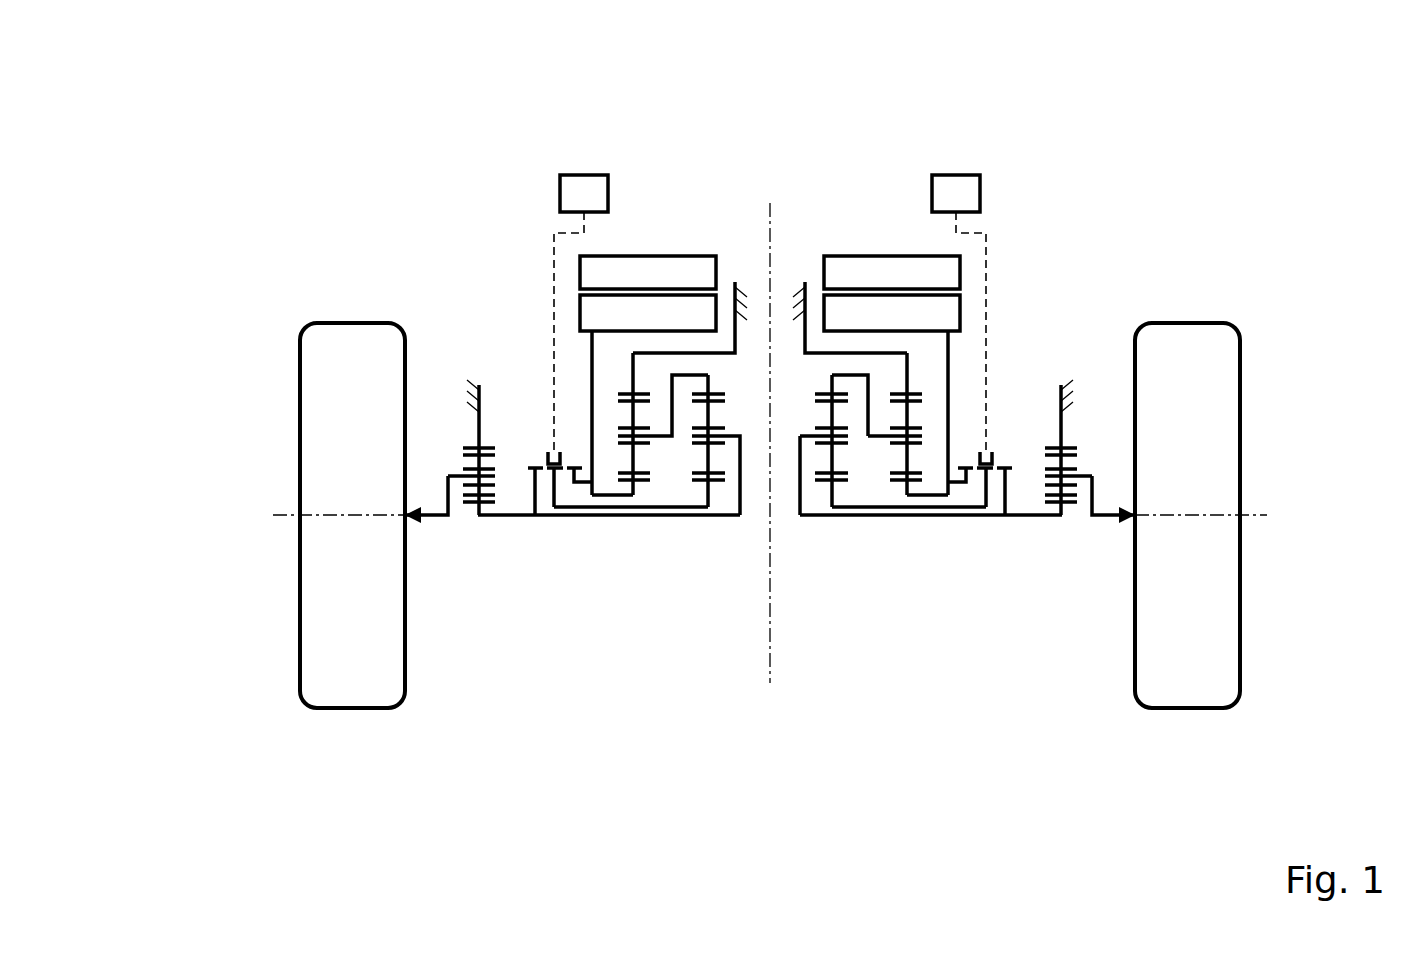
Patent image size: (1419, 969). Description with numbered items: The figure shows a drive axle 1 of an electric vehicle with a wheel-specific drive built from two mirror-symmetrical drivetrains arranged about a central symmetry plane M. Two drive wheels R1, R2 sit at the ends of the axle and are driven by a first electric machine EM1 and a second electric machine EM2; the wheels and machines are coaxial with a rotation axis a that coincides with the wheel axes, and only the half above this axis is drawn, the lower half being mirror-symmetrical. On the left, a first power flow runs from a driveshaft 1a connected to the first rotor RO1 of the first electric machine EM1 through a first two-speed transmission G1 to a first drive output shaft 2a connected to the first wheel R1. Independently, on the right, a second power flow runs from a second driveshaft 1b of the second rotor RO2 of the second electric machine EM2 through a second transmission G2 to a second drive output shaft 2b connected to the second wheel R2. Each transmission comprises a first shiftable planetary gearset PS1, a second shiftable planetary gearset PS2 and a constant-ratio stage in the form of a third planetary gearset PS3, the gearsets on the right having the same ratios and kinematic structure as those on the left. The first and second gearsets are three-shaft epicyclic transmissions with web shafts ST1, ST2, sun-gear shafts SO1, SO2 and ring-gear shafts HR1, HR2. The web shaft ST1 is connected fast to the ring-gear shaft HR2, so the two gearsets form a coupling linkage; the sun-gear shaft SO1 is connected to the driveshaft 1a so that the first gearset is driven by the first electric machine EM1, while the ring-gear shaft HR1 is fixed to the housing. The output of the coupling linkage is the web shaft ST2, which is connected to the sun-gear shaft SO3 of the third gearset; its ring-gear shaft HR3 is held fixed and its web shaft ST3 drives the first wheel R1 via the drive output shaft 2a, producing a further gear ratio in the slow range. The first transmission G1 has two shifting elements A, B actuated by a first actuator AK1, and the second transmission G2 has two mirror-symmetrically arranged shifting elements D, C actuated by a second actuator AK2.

The drive axle 1 is at (1130, 208).
The driveshaft 1a is at (592, 357).
The second driveshaft 1b is at (950, 365).
The first drive output shaft 2a is at (448, 513).
The second drive output shaft 2b is at (1092, 513).
The rotation axis a is at (293, 517).
The central symmetry plane M is at (770, 653).
The first drive wheel R1 is at (345, 577).
The second drive wheel R2 is at (1195, 577).
The first two-speed transmission G1 is at (582, 555).
The second transmission G2 is at (928, 557).
The first electric machine EM1 is at (631, 250).
The second electric machine EM2 is at (902, 250).
The first rotor RO1 is at (692, 312).
The second rotor RO2 is at (943, 317).
The first actuator AK1 is at (583, 192).
The second actuator AK2 is at (958, 193).
The first shiftable planetary gearset PS1 is at (634, 532).
The second shiftable planetary gearset PS2 is at (708, 532).
The third planetary gearset PS3 is at (480, 532).
The ring-gear shaft of first planetary gearset HR1 is at (737, 343).
The ring-gear shaft of second planetary gearset HR2 is at (710, 387).
The ring-gear shaft of third planetary gearset HR3 is at (478, 437).
The sun-gear shaft of first planetary gearset SO1 is at (610, 497).
The sun-gear shaft of second planetary gearset SO2 is at (688, 507).
The sun-gear shaft of third planetary gearset SO3 is at (510, 516).
The web shaft of first planetary gearset ST1 is at (662, 440).
The web shaft of second planetary gearset ST2 is at (727, 518).
The web shaft of third planetary gearset ST3 is at (460, 470).
The shifting element A is at (543, 472).
The shifting element B is at (569, 468).
The shifting element C is at (979, 468).
The shifting element D is at (986, 472).